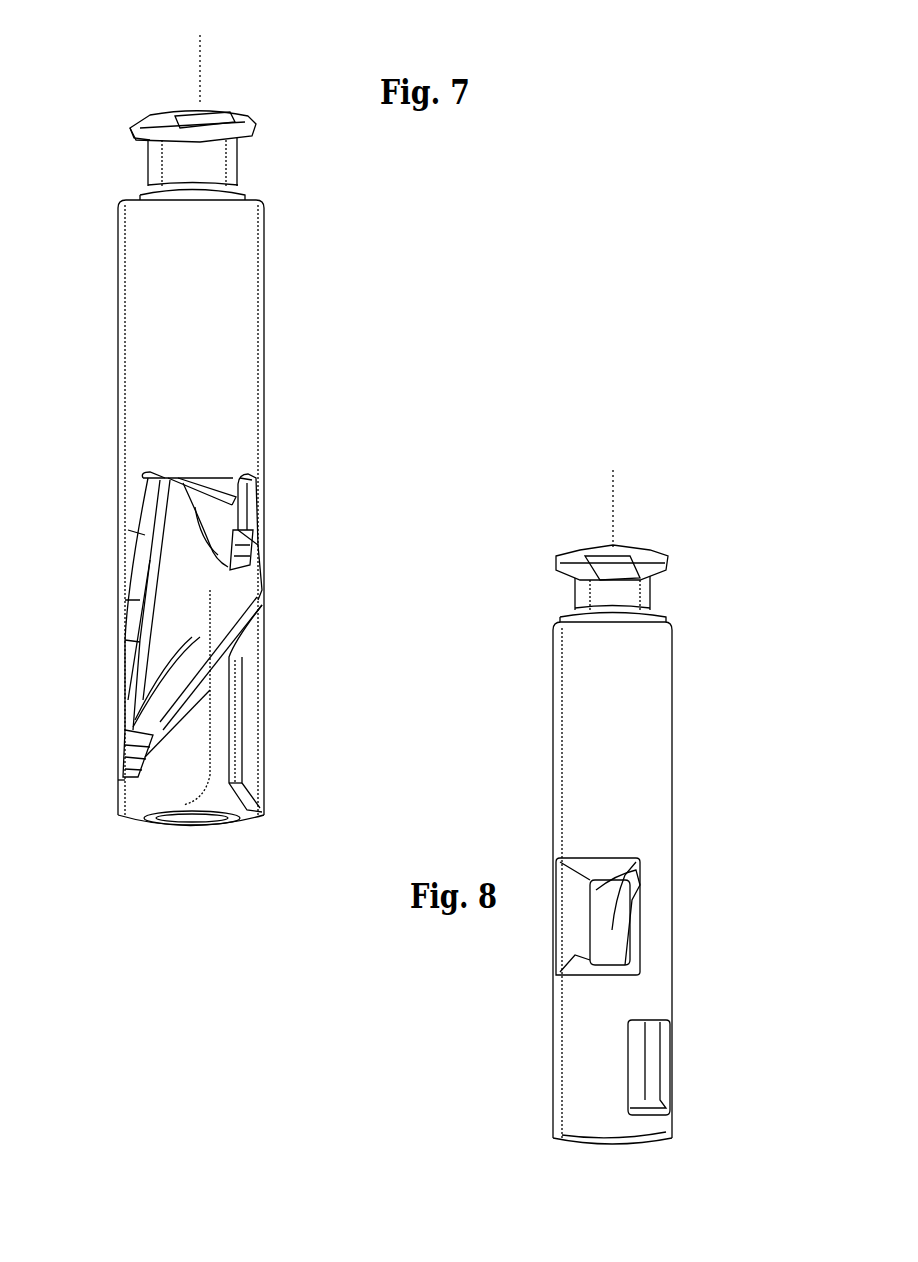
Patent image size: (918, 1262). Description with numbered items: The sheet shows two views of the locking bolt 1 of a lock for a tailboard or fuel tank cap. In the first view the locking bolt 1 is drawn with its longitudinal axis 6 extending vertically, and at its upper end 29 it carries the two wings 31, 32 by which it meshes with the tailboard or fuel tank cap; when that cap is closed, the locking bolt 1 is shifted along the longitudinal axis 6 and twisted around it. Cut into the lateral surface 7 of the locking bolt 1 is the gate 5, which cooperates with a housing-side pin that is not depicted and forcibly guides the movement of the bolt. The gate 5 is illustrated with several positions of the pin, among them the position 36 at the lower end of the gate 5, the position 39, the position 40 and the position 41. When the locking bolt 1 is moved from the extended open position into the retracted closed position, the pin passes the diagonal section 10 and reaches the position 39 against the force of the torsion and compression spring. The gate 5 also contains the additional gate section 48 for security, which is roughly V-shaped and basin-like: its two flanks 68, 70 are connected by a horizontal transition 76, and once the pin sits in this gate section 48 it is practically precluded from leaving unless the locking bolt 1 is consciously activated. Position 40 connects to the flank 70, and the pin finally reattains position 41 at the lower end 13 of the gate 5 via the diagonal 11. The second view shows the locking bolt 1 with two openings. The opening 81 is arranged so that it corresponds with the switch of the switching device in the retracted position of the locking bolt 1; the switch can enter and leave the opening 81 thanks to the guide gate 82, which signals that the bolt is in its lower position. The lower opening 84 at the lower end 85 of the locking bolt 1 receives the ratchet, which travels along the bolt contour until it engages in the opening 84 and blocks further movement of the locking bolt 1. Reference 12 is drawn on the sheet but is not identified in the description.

In FIG. 7, the locking bolt 1 is at (250, 298).
In FIG. 8, the locking bolt 1 is at (662, 752).
In FIG. 7, the gate 5 is at (165, 548).
In FIG. 7, the longitudinal axis 6 is at (207, 45).
In FIG. 8, the longitudinal axis 6 is at (617, 478).
In FIG. 7, the lateral surface 7 is at (262, 355).
In FIG. 7, the diagonal section 10 is at (207, 673).
In FIG. 7, the diagonal 11 is at (160, 537).
In FIG. 7, the housing opening 12 is at (298, 473).
In FIG. 7, the lower end of the gate 13 is at (114, 770).
In FIG. 7, the upper end 29 is at (250, 218).
In FIG. 7, the wing 31 is at (258, 128).
In FIG. 7, the wing 32 is at (135, 130).
In FIG. 7, the position at the lower end of the gate 36 is at (130, 762).
In FIG. 7, the position 39 is at (182, 483).
In FIG. 7, the position 40 is at (150, 480).
In FIG. 7, the position 41 is at (125, 745).
In FIG. 7, the gate section 48 is at (218, 553).
In FIG. 7, the flank 68 is at (248, 478).
In FIG. 7, the flank 70 is at (225, 497).
In FIG. 7, the transition 76 is at (235, 560).
In FIG. 8, the opening 81 is at (612, 932).
In FIG. 8, the guide gate 82 is at (650, 895).
In FIG. 8, the lower opening 84 is at (645, 1055).
In FIG. 7, the lower end 85 is at (258, 790).
In FIG. 8, the lower end 85 is at (658, 1128).